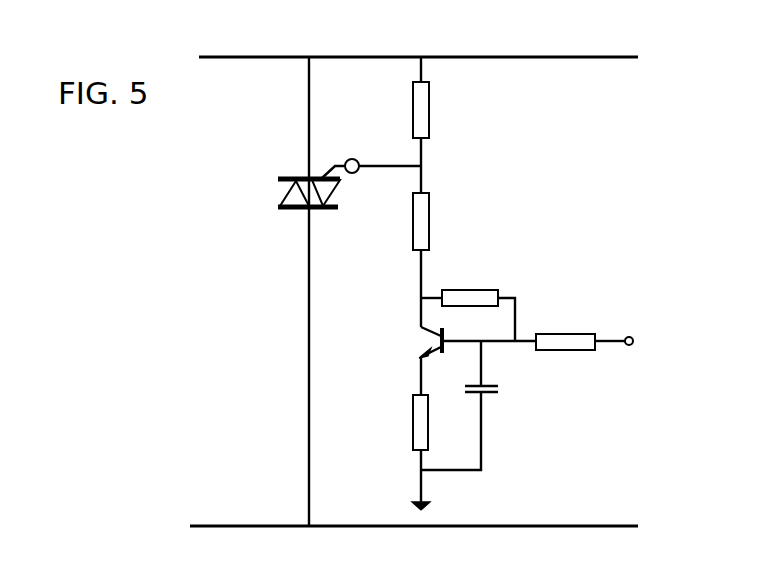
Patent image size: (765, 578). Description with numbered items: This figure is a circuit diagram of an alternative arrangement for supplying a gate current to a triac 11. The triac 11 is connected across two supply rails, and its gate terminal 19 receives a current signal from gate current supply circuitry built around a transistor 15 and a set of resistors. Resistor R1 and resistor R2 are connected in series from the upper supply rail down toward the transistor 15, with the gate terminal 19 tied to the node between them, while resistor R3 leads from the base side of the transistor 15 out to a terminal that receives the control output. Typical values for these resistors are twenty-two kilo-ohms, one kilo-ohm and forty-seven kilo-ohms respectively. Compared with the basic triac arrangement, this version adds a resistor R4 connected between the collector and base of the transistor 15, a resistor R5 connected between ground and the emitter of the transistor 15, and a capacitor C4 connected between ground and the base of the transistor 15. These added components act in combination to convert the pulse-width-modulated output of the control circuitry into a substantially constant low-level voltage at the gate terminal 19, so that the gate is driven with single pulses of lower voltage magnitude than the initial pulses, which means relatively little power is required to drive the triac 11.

The triac 11 is at (292, 178).
The gate terminal 19 is at (354, 158).
The transistor 15 is at (421, 327).
The resistor R1 is at (428, 109).
The resistor R2 is at (428, 223).
The resistor R3 is at (572, 333).
The resistor R4 is at (470, 288).
The resistor R5 is at (413, 423).
The capacitor C4 is at (495, 393).